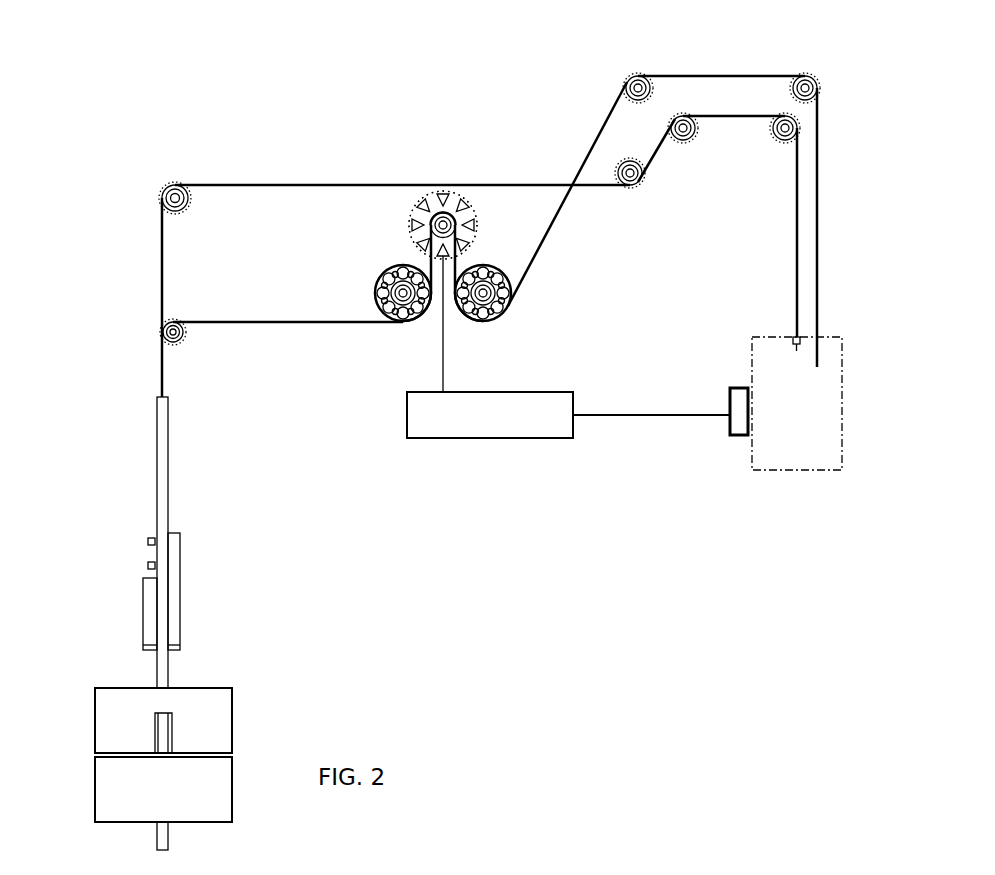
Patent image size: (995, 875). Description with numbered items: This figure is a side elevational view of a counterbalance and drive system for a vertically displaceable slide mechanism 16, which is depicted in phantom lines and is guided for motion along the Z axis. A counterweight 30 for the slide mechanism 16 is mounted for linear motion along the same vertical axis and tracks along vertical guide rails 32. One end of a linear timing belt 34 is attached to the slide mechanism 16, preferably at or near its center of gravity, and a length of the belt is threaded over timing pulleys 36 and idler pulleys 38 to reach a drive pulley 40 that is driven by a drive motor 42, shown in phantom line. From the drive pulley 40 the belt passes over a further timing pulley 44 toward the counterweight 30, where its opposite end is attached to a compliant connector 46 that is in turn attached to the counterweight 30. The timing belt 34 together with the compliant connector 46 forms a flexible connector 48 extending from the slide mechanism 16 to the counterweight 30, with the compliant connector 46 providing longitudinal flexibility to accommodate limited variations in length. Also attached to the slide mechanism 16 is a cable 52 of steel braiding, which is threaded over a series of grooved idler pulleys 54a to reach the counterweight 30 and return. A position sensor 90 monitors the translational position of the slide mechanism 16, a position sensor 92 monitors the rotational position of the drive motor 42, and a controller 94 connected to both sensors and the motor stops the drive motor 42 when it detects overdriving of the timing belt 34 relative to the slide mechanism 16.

The slide mechanism 16 is at (814, 428).
The counterweight 30 is at (110, 725).
The vertical guide rails 32 is at (156, 433).
The linear timing belt 34 is at (818, 222).
The timing pulleys 36 is at (790, 76).
The idler pulleys 38 is at (380, 275).
The drive pulley 40 is at (440, 222).
The drive motor 42 is at (466, 209).
The timing pulley 44 is at (183, 340).
The compliant connector 46 is at (181, 633).
The flexible connector 48 is at (585, 154).
The cable 52 is at (795, 252).
The grooved idler pulleys 54a is at (165, 188).
The position sensor 90 is at (730, 402).
The position sensor 92 is at (412, 213).
The controller 94 is at (568, 415).